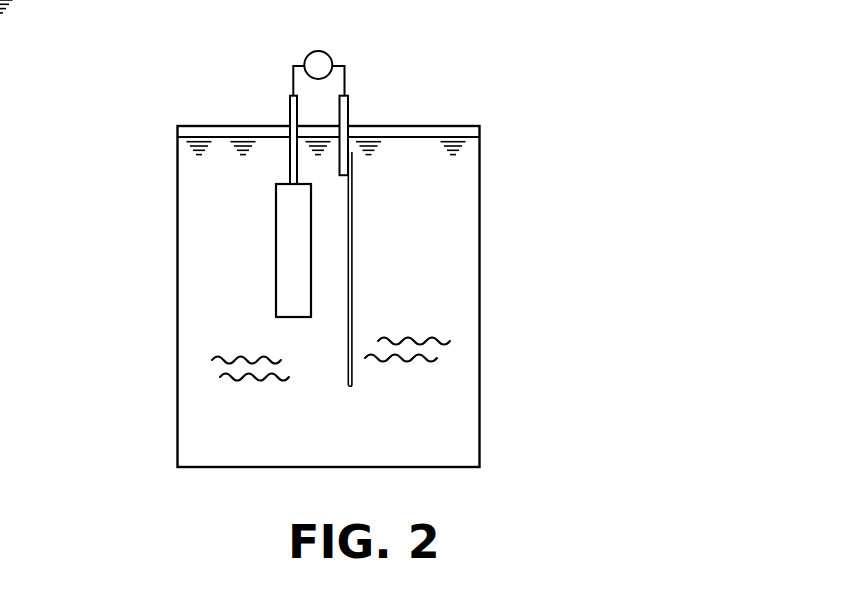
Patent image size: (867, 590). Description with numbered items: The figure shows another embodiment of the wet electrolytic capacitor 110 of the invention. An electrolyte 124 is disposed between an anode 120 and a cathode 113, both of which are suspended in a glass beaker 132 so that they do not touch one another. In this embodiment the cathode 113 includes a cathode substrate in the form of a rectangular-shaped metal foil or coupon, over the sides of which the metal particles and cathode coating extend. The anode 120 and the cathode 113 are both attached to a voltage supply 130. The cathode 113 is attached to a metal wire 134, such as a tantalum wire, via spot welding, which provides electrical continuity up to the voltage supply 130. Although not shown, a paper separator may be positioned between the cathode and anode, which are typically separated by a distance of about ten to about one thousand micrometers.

The electrochemical test system 110 is at (659, 188).
The cathode 113 is at (350, 265).
The anode 120 is at (290, 212).
The electrolyte 124 is at (228, 376).
The voltage supply 130 is at (333, 61).
The glass beaker 132 is at (480, 320).
The metal wire 134 is at (344, 108).